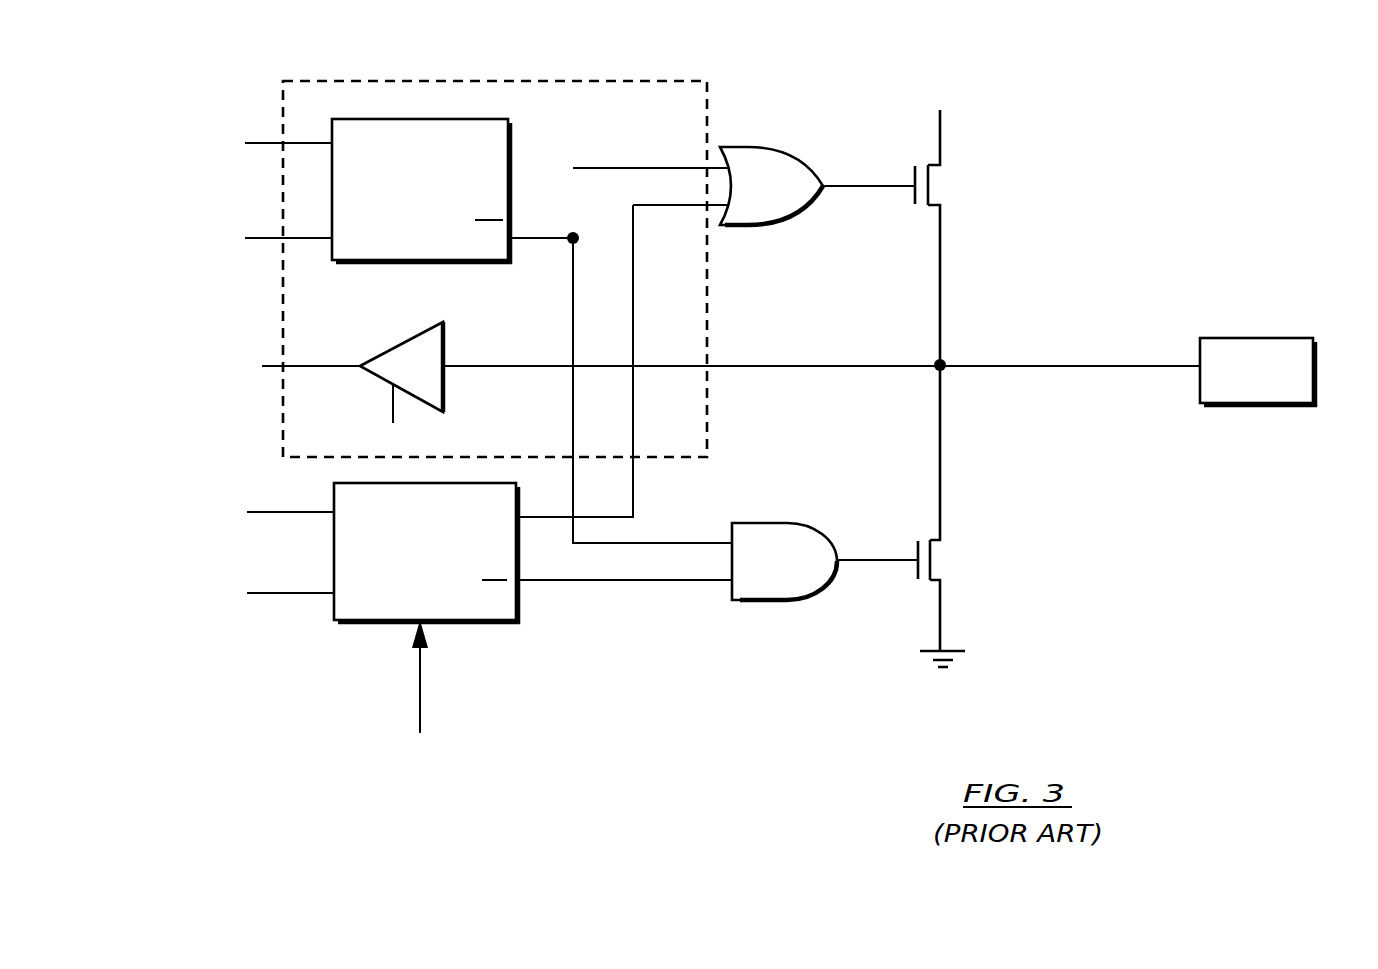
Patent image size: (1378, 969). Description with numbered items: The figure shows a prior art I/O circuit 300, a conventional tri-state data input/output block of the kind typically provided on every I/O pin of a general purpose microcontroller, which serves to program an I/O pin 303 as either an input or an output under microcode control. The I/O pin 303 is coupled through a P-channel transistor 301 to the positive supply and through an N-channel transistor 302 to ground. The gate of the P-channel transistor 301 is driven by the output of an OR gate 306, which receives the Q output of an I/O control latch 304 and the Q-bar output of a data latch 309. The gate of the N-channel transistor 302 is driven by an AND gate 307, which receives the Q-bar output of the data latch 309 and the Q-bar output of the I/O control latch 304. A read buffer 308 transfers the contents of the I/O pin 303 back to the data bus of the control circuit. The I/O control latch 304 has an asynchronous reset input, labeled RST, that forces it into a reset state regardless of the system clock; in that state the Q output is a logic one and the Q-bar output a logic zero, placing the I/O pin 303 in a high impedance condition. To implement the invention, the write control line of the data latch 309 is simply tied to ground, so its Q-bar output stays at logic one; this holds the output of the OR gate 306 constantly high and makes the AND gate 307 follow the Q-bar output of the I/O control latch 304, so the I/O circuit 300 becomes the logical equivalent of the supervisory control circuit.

The I/O circuit 300 is at (993, 72).
The P-channel transistor 301 is at (966, 167).
The N-channel transistor 302 is at (967, 553).
The I/O pin 303 is at (1275, 327).
The I/O control latch 304 is at (372, 630).
The OR gate 306 is at (789, 196).
The AND gate 307 is at (790, 572).
The read buffer 308 is at (431, 379).
The data latch 309 is at (406, 270).